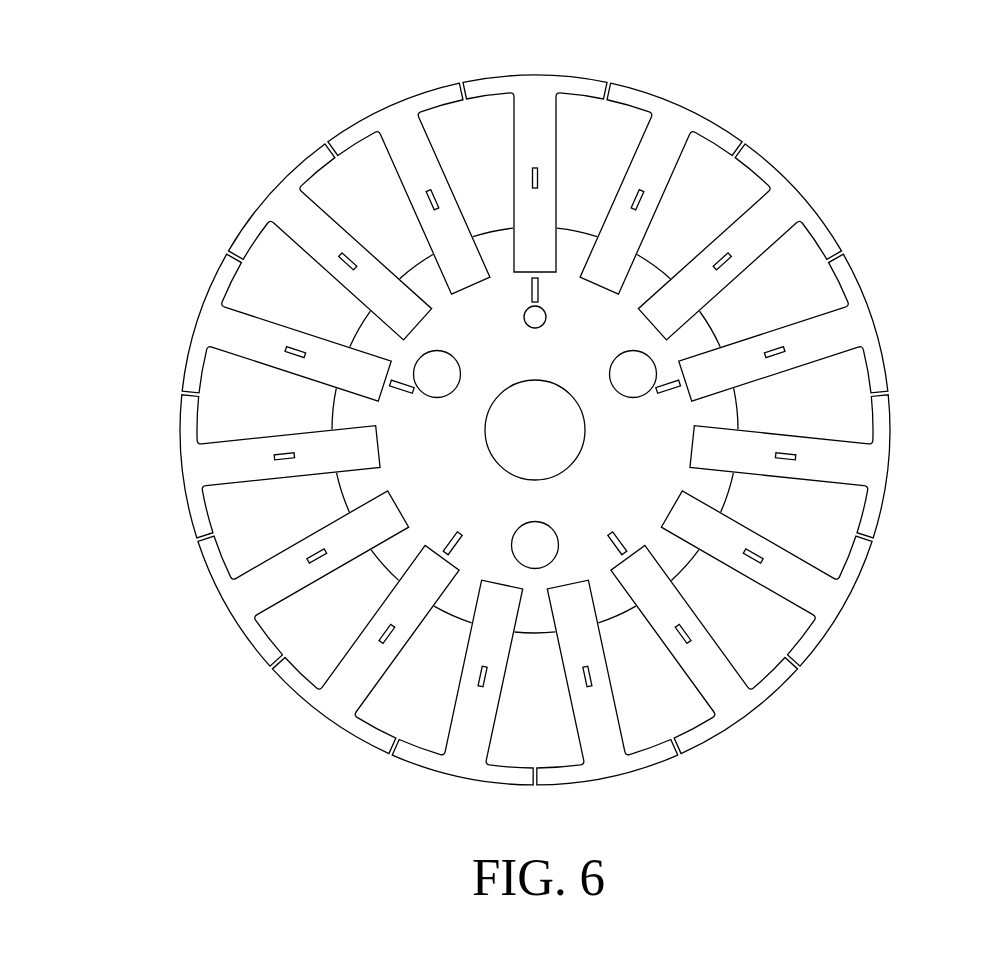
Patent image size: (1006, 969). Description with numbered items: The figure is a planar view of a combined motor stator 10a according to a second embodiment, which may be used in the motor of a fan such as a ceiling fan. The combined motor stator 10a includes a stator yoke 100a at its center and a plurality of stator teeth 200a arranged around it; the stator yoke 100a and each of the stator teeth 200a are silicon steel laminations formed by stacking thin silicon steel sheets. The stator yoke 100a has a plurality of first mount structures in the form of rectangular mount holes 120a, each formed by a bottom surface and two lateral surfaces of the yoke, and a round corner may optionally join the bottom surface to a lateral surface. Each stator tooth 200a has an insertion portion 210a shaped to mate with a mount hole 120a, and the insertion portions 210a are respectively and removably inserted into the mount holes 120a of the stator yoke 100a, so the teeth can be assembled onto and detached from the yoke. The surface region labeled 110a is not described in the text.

The combined motor stator 10a is at (197, 53).
The stator yoke 100a is at (656, 430).
The rotor pole segment 110a is at (738, 398).
The mount hole 120a is at (694, 332).
The stator tooth 200a is at (565, 433).
The insertion portion 210a is at (665, 313).